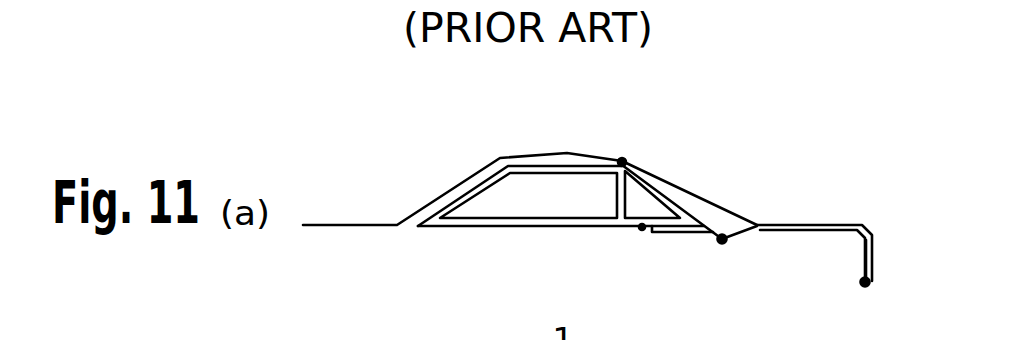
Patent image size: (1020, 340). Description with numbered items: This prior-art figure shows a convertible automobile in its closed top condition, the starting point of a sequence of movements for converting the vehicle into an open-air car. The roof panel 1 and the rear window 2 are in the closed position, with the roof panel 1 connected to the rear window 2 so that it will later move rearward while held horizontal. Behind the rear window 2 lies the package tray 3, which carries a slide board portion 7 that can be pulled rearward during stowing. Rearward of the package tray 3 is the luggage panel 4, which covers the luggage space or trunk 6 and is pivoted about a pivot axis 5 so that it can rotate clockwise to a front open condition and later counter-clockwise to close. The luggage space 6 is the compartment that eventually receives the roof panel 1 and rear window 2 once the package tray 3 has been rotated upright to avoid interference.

The roof panel 1 is at (548, 152).
The rear window 2 is at (697, 193).
The package tray 3 is at (657, 208).
The luggage panel 4 is at (812, 223).
The pivot axis 5 is at (866, 283).
The luggage space 6 is at (827, 258).
The slide board portion 7 is at (674, 233).